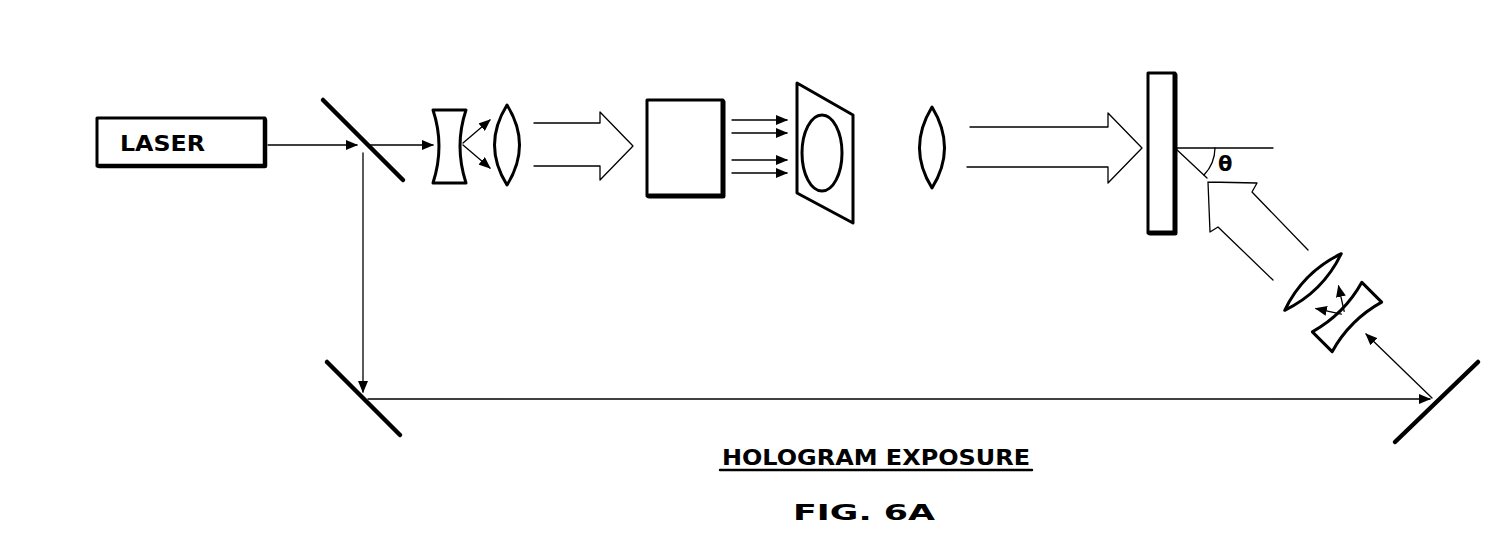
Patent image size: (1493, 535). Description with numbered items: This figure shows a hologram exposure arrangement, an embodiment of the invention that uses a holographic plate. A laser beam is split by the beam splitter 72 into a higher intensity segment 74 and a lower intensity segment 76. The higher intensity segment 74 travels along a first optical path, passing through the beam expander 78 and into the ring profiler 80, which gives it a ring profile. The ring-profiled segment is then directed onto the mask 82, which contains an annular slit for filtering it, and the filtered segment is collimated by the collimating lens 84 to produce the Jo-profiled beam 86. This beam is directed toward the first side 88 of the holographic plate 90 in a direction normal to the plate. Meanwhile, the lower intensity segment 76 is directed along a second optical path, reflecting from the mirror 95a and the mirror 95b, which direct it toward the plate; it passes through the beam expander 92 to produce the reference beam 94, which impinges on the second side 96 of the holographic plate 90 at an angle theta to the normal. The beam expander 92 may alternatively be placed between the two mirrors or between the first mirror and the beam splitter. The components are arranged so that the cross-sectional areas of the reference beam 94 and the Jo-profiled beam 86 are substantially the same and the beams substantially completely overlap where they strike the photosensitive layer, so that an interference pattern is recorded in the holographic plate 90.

The beam splitter 72 is at (360, 113).
The higher intensity segment 74 is at (382, 128).
The lower intensity segment 76 is at (363, 318).
The beam expander 78 is at (478, 182).
The ring profiler 80 is at (686, 189).
The mask 82 is at (834, 162).
The collimating lens 84 is at (971, 117).
The Jo-profiled beam 86 is at (1054, 156).
The first side 88 is at (1148, 210).
The holographic plate 90 is at (1158, 126).
The beam expander 92 is at (1375, 286).
The reference beam 94 is at (1258, 229).
The mirror 95a is at (419, 418).
The mirror 95b is at (1379, 418).
The second side 96 is at (1176, 117).